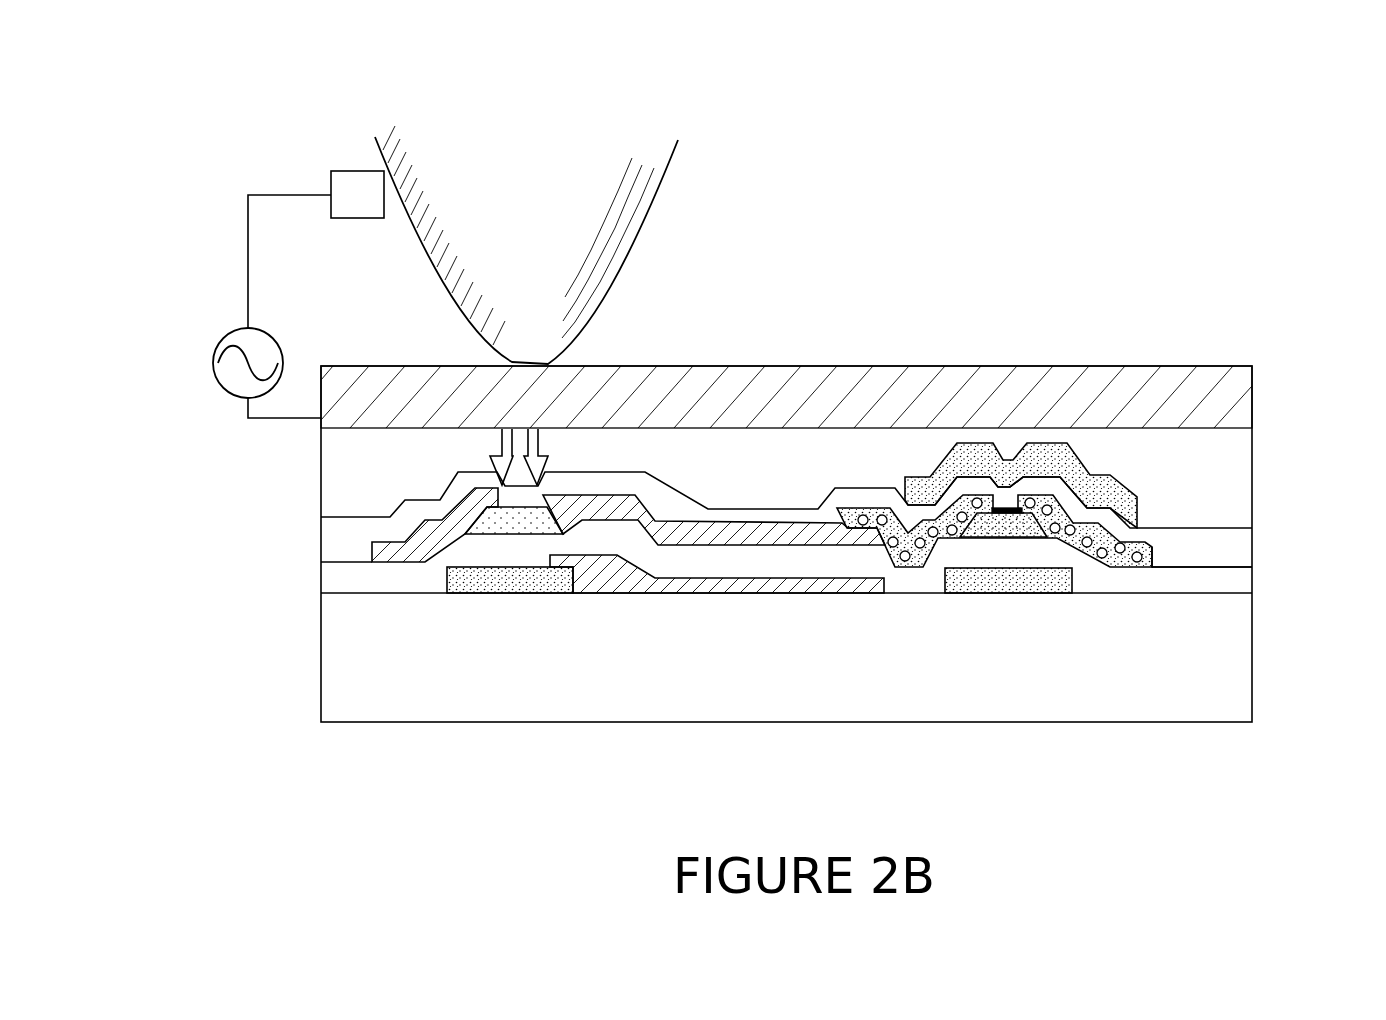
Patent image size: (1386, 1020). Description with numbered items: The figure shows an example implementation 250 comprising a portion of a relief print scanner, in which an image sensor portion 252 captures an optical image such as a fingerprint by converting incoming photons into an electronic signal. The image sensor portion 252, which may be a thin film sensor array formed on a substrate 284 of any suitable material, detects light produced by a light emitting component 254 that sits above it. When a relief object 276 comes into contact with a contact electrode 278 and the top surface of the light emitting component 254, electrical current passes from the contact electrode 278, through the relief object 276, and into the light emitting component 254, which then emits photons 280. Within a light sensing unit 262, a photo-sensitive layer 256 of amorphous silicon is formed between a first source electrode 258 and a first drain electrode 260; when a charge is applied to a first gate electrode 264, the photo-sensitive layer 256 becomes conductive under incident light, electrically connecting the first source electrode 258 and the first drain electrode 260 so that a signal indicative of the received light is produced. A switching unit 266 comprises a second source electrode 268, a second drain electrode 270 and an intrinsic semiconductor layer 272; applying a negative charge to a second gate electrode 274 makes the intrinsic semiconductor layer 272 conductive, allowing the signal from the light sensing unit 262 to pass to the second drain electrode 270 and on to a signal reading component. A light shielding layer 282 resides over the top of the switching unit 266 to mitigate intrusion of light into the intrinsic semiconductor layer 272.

The example implementation 250 is at (120, 103).
The image sensor portion 252 is at (1255, 430).
The light emitting component 254 is at (1240, 393).
The photo-sensitive layer 256 is at (488, 518).
The first source electrode 258 is at (384, 546).
The first drain electrode 260 is at (603, 505).
The light sensing unit 262 is at (752, 760).
The first gate electrode 264 is at (515, 594).
The switching unit 266 is at (1215, 760).
The second source electrode 268 is at (857, 508).
The second drain electrode 270 is at (1138, 568).
The intrinsic semiconductor layer 272 is at (1007, 520).
The second gate electrode 274 is at (1048, 594).
The relief object 276 is at (582, 278).
The contact electrode 278 is at (345, 171).
The photons 280 is at (540, 445).
The light shielding layer 282 is at (1047, 452).
The substrate 284 is at (305, 654).